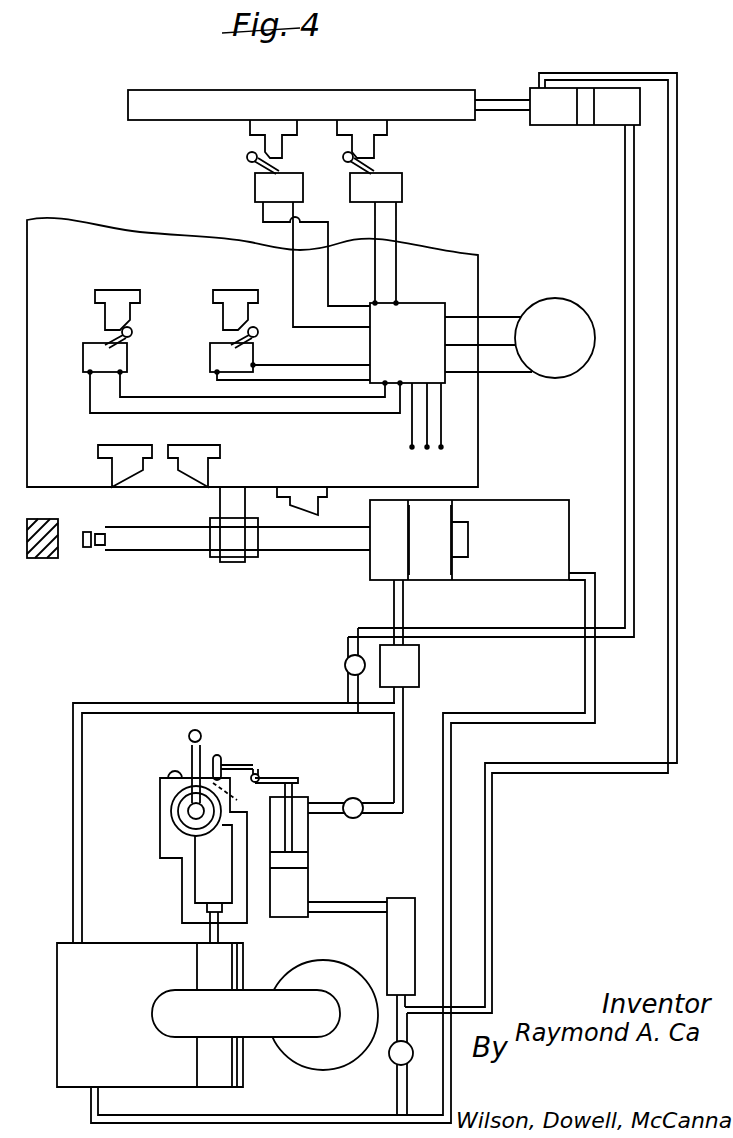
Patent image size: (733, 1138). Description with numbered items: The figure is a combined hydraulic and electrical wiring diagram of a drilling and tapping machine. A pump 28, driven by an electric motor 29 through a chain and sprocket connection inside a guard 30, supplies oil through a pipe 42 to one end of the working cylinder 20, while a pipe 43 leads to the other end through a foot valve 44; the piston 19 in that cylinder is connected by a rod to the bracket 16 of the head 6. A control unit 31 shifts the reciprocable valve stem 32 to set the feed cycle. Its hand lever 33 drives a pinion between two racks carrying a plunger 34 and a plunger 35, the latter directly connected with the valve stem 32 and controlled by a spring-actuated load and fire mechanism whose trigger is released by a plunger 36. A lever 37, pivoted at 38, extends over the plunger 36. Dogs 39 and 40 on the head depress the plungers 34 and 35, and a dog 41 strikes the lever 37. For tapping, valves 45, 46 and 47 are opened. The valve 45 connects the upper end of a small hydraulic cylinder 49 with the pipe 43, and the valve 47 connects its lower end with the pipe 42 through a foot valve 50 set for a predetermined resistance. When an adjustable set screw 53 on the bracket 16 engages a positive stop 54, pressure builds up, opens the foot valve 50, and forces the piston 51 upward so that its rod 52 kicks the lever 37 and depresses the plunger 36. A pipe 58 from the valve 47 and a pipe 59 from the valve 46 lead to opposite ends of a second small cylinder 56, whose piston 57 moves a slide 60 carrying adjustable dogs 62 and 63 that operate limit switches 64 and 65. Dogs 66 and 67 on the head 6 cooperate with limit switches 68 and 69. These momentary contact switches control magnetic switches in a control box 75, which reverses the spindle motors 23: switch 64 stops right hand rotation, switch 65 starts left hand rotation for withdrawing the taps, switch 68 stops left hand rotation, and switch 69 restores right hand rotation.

The head 6 is at (478, 435).
The bracket 16 is at (230, 552).
The piston 19 is at (439, 568).
The working cylinder 20 is at (542, 507).
The electric motor 23 is at (559, 372).
The pump 28 is at (115, 950).
The electric motor 29 is at (328, 972).
The guard 30 is at (252, 993).
The control unit 31 is at (165, 843).
The valve stem 32 is at (218, 935).
The hand lever 33 is at (195, 760).
The plunger 34 is at (170, 776).
The plunger 35 is at (218, 755).
The plunger 36 is at (239, 796).
The lever 37 is at (282, 778).
The pivot 38 is at (256, 773).
The dog 39 is at (115, 462).
The dog 40 is at (202, 465).
The dog 41 is at (345, 470).
The pipe 42 is at (497, 715).
The pipe 43 is at (73, 860).
The foot valve 44 is at (414, 660).
The valve 45 is at (359, 798).
The valve 46 is at (344, 663).
The valve 47 is at (412, 1056).
The hydraulic cylinder 49 is at (302, 883).
The foot valve 50 is at (409, 928).
The piston 51 is at (302, 862).
The rod 52 is at (292, 793).
The set screw 53 is at (88, 548).
The stop 54 is at (47, 558).
The hydraulic cylinder 56 is at (557, 126).
The piston 57 is at (590, 103).
The pipe 58 is at (624, 73).
The pipe 59 is at (629, 268).
The slide 60 is at (356, 92).
The dog 62 is at (375, 147).
The dog 63 is at (278, 148).
The limit switch 64 is at (402, 192).
The limit switch 65 is at (253, 195).
The dog 66 is at (107, 313).
The dog 67 is at (232, 311).
The limit switch 68 is at (128, 352).
The limit switch 69 is at (255, 350).
The control box 75 is at (424, 312).